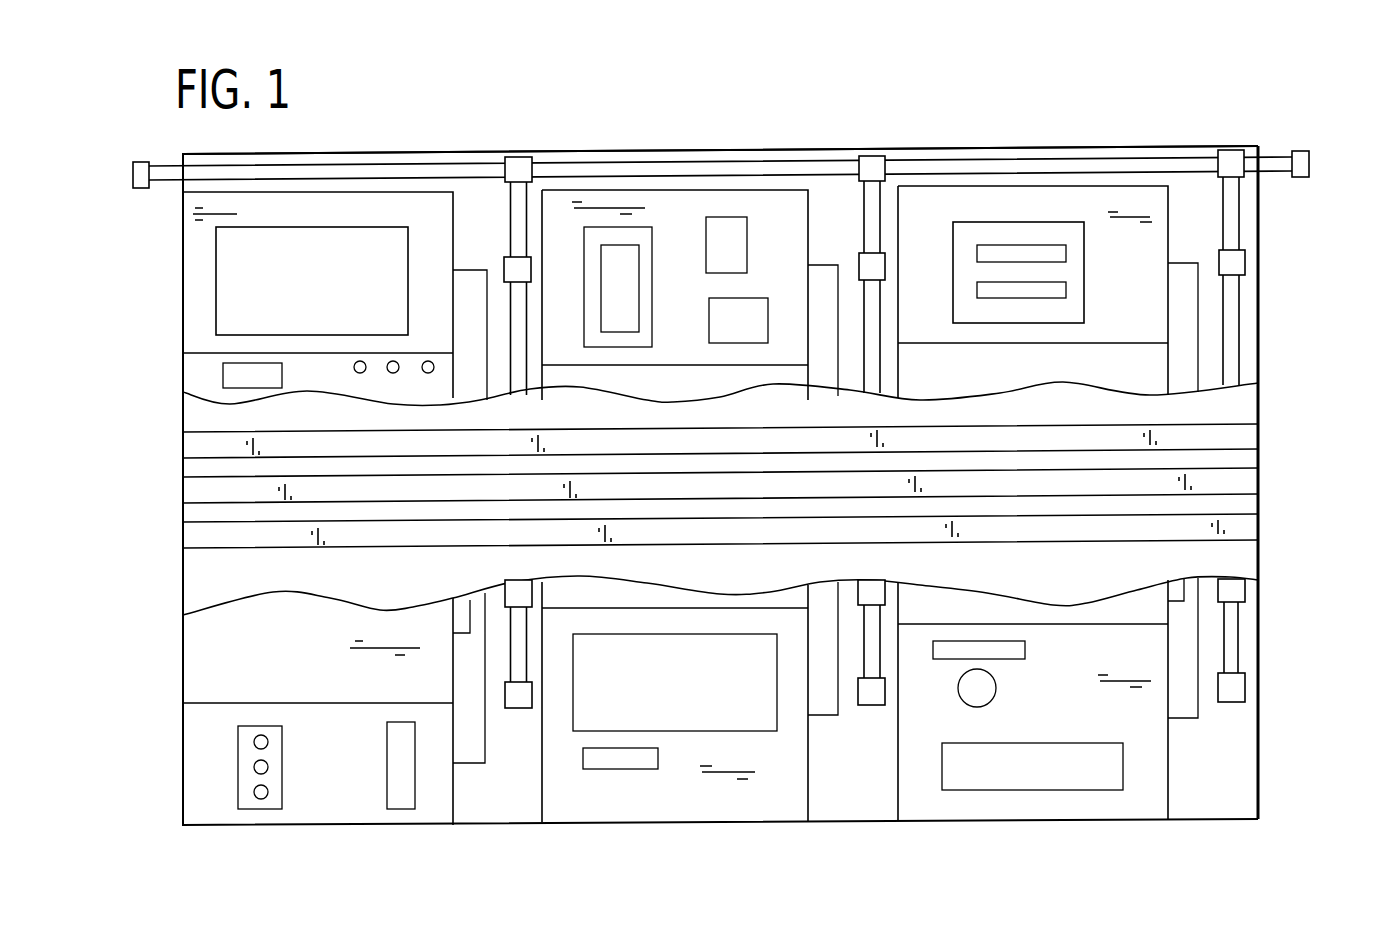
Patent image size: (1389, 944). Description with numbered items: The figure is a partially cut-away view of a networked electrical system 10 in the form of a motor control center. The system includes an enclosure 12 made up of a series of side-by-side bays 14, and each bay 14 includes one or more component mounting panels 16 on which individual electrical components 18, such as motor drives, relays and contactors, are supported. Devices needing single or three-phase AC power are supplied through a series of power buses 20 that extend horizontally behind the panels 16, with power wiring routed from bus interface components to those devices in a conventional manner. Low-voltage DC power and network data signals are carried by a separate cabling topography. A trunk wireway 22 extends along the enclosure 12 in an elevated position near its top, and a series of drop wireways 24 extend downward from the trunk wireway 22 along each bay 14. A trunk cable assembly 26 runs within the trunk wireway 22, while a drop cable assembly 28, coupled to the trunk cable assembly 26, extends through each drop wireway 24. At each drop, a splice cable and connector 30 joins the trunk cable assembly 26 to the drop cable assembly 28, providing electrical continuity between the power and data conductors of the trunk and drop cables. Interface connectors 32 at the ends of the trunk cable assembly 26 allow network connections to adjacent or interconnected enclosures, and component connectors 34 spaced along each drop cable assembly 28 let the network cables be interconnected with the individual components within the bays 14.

The networked electrical system 10 is at (160, 812).
The enclosure 12 is at (183, 737).
The bay 14 is at (360, 810).
The component mounting panel 16 is at (196, 725).
The electrical component 18 is at (238, 362).
The power bus 20 is at (1245, 527).
The trunk wireway 22 is at (1183, 148).
The drop wireway 24 is at (537, 208).
The trunk cable assembly 26 is at (1058, 163).
The drop cable assembly 28 is at (516, 217).
The splice cable and connector 30 is at (511, 157).
The interface connector 32 is at (133, 168).
The component connector 34 is at (870, 272).